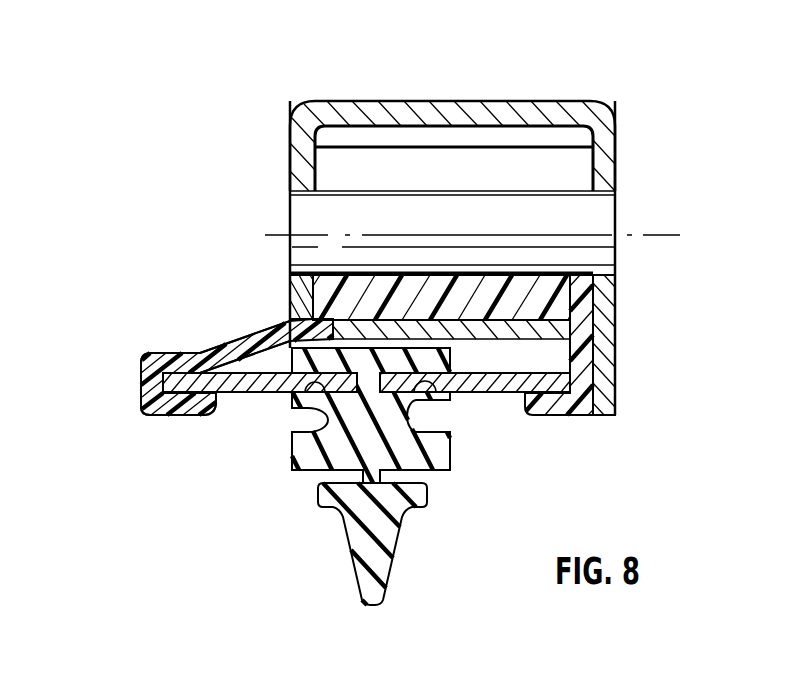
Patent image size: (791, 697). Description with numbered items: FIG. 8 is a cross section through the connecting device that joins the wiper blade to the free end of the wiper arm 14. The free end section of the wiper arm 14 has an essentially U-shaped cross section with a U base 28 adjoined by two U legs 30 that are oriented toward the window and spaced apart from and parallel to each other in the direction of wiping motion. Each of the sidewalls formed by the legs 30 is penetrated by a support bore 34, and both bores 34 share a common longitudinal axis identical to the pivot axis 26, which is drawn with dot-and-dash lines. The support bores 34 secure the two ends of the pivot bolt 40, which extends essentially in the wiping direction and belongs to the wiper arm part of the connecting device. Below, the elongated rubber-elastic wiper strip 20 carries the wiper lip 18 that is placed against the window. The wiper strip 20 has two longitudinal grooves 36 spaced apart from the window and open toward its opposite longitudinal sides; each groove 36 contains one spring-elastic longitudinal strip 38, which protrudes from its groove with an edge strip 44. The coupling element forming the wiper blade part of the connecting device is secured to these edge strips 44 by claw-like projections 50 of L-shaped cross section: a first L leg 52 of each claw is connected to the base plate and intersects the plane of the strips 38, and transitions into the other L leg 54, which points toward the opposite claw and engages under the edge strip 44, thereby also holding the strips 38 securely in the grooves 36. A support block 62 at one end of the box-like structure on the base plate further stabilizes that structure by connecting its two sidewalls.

The wiper arm 14 is at (344, 70).
The wiper lip 18 is at (387, 538).
The wiper strip 20 is at (275, 470).
The pivot axis 26 is at (613, 266).
The U base 28 is at (505, 113).
The U legs 30 is at (303, 300).
The support bore 34 is at (308, 196).
The longitudinal grooves 36 is at (305, 470).
The longitudinal strips 38 is at (258, 415).
The pivot bolt 40 is at (598, 208).
The edge strips 44 is at (250, 378).
The claw-like projections 50 is at (118, 430).
The first L leg 52 is at (148, 365).
The other L leg 54 is at (197, 405).
The support block 62 is at (573, 298).